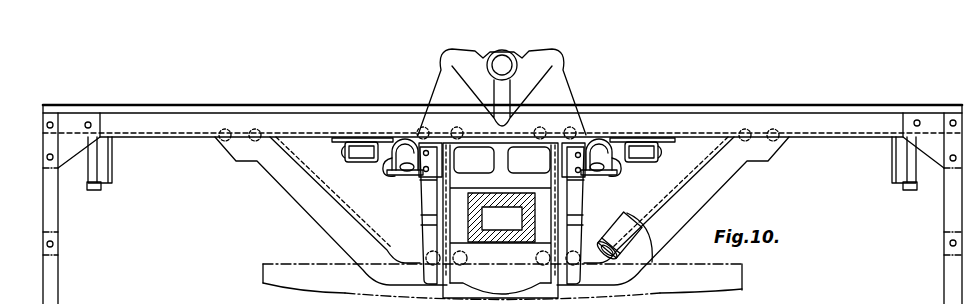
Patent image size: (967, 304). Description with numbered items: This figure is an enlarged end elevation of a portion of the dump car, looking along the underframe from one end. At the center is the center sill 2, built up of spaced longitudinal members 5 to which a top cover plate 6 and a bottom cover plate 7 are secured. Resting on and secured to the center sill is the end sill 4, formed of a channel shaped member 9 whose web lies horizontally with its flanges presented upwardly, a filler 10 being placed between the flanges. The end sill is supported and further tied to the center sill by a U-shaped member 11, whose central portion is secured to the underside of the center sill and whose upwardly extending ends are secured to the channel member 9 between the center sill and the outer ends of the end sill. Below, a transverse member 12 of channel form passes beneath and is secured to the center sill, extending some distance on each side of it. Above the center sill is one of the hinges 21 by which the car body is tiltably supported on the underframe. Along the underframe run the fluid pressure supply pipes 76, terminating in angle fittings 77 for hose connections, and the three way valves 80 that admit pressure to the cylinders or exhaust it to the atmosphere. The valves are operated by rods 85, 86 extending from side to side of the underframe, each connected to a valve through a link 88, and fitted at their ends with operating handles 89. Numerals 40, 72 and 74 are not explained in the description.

The center sill 2 is at (460, 212).
The end sill 4 is at (799, 120).
The longitudinal members 5 is at (430, 198).
The top cover plate 6 is at (438, 136).
The bottom cover plate 7 is at (445, 262).
The channel shaped member 9 is at (212, 122).
The filler 10 is at (840, 107).
The U-shaped member 11 is at (708, 173).
The transverse member 12 is at (315, 277).
The hinge 21 is at (537, 63).
The member 40 is at (214, 300).
The member 72 is at (217, 300).
The member 74 is at (217, 300).
The fluid pressure supply pipe 76 is at (388, 168).
The angle fitting 77 is at (407, 153).
The three way valve 80 is at (360, 150).
The rod 85 is at (873, 134).
The rod 86 is at (134, 134).
The link 88 is at (368, 140).
The operating handle 89 is at (97, 167).